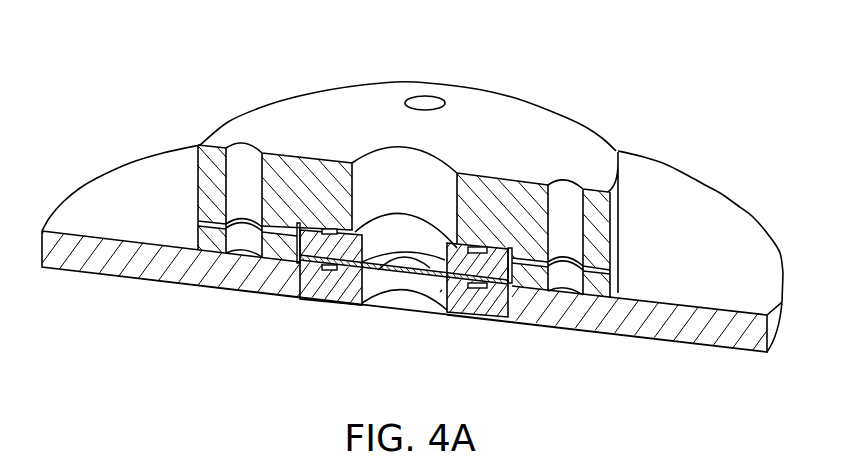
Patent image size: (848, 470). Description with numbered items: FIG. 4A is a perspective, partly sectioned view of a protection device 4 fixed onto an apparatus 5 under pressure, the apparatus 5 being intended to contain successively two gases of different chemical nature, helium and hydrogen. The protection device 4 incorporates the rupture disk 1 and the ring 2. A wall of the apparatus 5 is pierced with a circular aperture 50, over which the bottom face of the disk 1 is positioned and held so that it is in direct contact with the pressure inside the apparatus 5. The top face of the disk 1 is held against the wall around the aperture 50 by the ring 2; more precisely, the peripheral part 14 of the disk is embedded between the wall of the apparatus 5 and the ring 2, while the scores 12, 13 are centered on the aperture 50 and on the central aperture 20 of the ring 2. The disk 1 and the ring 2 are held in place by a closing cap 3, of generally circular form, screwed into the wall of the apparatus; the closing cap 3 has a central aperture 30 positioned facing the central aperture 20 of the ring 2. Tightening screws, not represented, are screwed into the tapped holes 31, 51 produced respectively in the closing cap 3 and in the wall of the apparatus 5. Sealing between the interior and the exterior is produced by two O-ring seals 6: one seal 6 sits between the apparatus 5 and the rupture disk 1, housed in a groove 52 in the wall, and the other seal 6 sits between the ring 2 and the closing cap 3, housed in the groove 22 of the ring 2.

The rupture disk 1 is at (405, 280).
The ring 2 is at (307, 253).
The closing cap 3 is at (495, 105).
The protection device 4 is at (129, 98).
The apparatus 5 is at (93, 262).
The O-ring seal 6 is at (471, 244).
The score 12 is at (380, 228).
The score 13 is at (391, 222).
The peripheral part 14 is at (493, 281).
The central aperture 20 is at (378, 230).
The groove 22 is at (307, 232).
The central aperture 30 is at (433, 178).
The tapped holes 31 is at (243, 152).
The circular aperture 50 is at (437, 288).
The tapped holes 51 is at (247, 232).
The groove 52 is at (331, 272).